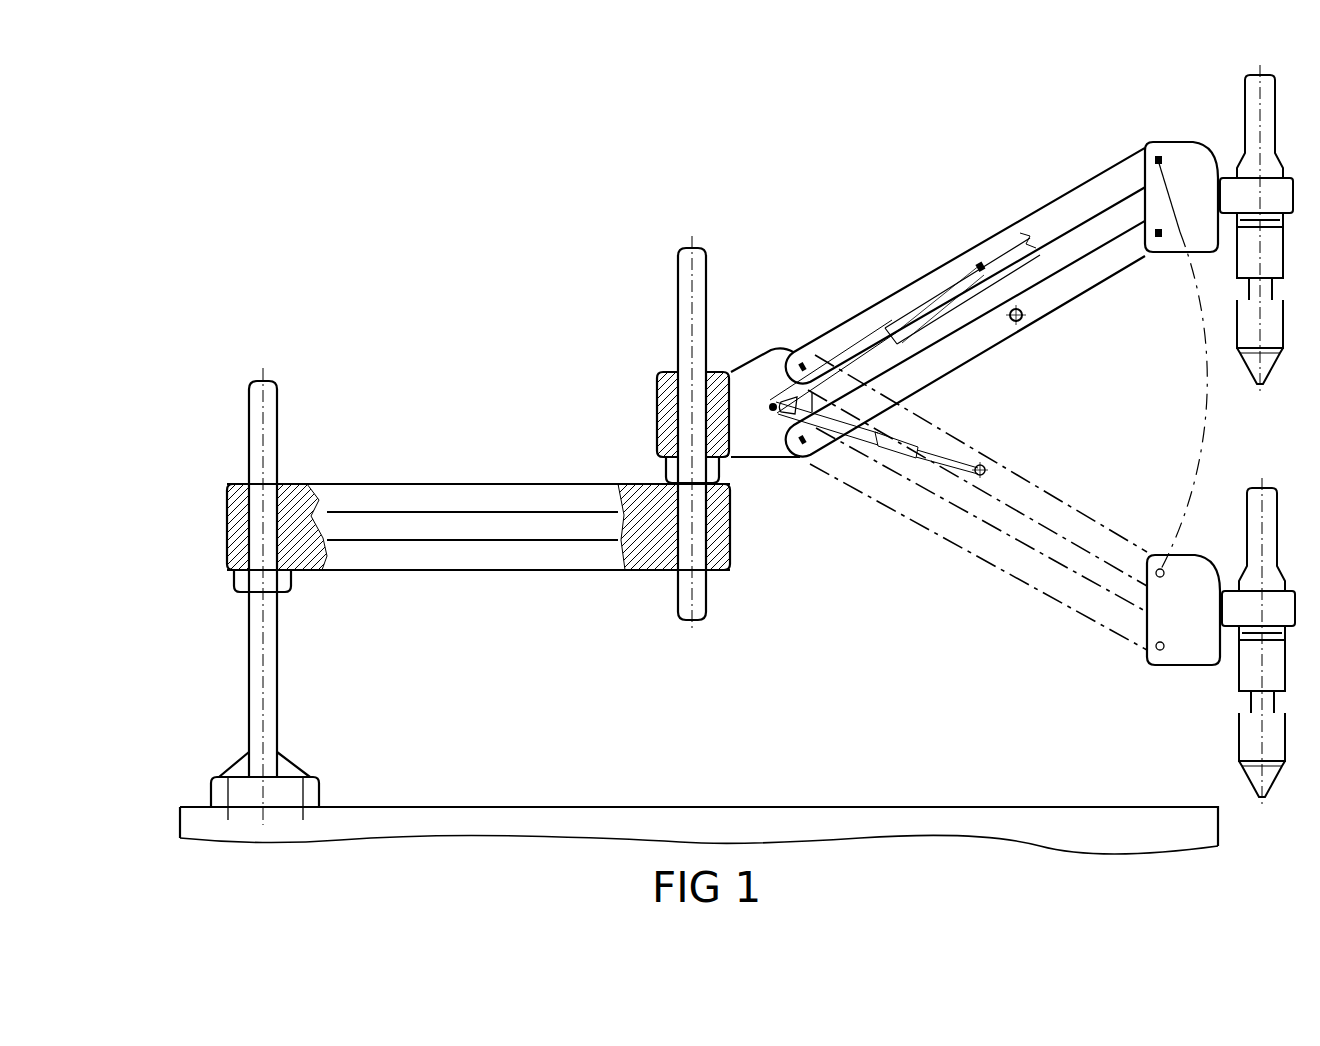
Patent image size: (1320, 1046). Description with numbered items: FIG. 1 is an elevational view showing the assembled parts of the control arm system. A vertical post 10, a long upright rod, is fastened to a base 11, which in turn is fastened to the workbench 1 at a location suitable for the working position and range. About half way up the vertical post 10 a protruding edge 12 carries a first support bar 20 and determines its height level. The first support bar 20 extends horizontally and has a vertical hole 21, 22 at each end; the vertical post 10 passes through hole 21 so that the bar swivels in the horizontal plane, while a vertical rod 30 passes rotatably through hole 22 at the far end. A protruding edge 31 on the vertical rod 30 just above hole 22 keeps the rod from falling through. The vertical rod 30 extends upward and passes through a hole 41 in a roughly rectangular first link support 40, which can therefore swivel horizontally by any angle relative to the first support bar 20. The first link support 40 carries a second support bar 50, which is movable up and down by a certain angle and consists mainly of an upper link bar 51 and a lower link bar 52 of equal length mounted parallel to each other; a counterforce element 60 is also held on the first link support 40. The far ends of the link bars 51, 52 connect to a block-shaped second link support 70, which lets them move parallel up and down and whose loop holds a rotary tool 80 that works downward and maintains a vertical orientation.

The workbench 1 is at (1000, 830).
The vertical post 10 is at (284, 401).
The base 11 is at (307, 791).
The protruding edge 12 is at (291, 598).
The first support bar 20 is at (466, 596).
The hole 21 is at (277, 478).
The hole 22 is at (713, 571).
The vertical rod 30 is at (668, 245).
The protruding edge 31 is at (683, 469).
The first link support 40 is at (759, 343).
The hole 41 is at (677, 372).
The second support bar 50 is at (966, 392).
The upper link bar 51 is at (1100, 203).
The lower link bar 52 is at (975, 345).
The counterforce element 60 is at (878, 330).
The second link support 70 is at (1175, 262).
The rotary tool 80 is at (1247, 93).